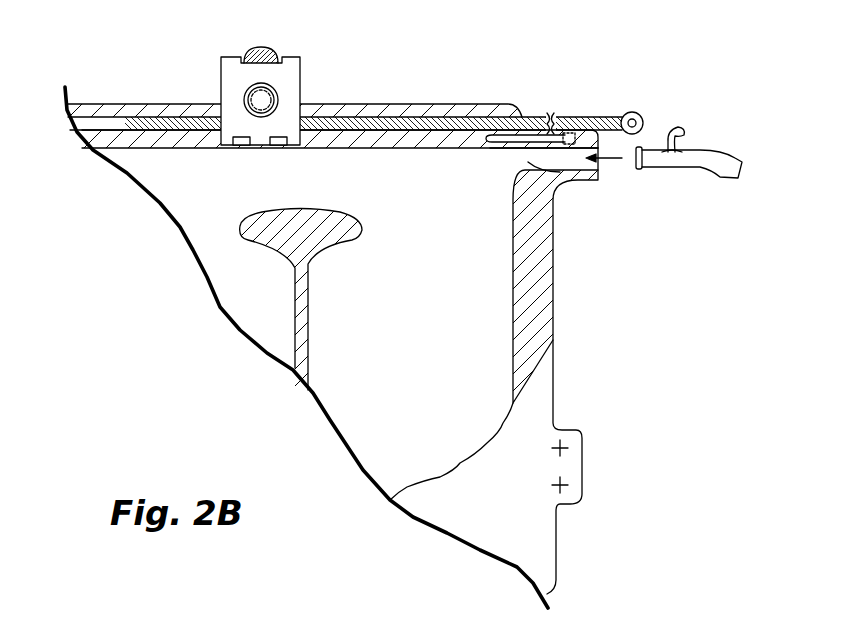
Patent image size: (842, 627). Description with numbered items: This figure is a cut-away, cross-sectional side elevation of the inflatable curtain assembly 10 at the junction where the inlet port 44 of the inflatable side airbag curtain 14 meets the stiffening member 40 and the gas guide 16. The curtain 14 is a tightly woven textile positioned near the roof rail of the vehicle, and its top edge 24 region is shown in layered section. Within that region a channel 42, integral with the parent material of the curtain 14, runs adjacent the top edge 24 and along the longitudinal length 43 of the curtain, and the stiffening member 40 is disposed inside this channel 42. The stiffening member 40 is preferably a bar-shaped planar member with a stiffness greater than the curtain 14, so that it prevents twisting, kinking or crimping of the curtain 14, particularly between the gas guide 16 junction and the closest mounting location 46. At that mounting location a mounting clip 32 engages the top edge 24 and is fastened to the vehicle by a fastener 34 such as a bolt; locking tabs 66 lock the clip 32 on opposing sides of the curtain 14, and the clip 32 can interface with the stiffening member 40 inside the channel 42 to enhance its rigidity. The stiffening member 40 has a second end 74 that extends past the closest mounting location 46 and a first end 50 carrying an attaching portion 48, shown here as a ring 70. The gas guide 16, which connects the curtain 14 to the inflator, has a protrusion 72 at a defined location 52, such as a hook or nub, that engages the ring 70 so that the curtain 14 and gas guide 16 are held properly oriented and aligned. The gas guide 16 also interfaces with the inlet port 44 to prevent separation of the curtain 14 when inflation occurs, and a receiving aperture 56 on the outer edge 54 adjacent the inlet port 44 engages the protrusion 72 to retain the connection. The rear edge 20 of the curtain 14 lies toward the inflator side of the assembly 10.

The inflatable curtain assembly 10 is at (550, 104).
The inflatable side airbag curtain 14 is at (161, 316).
The gas guide 16 is at (716, 165).
The rear edge 20 is at (553, 317).
The top edge 24 is at (284, 60).
The longitudinal length 43 is at (378, 103).
The mounting clip 32 is at (241, 106).
The fastener 34 is at (258, 97).
The stiffening member 40 is at (397, 125).
The channel 42 is at (123, 73).
The inlet port 44 is at (527, 163).
The closest mounting location 46 is at (290, 93).
The attaching portion 48 is at (682, 88).
The first end 50 is at (682, 88).
The defined location 52 is at (715, 157).
The outer edge 54 is at (598, 172).
The receiving aperture 56 is at (568, 143).
The locking tabs 66 is at (240, 143).
The ring 70 is at (645, 125).
The protrusion 72 is at (672, 152).
The second end 74 is at (103, 118).